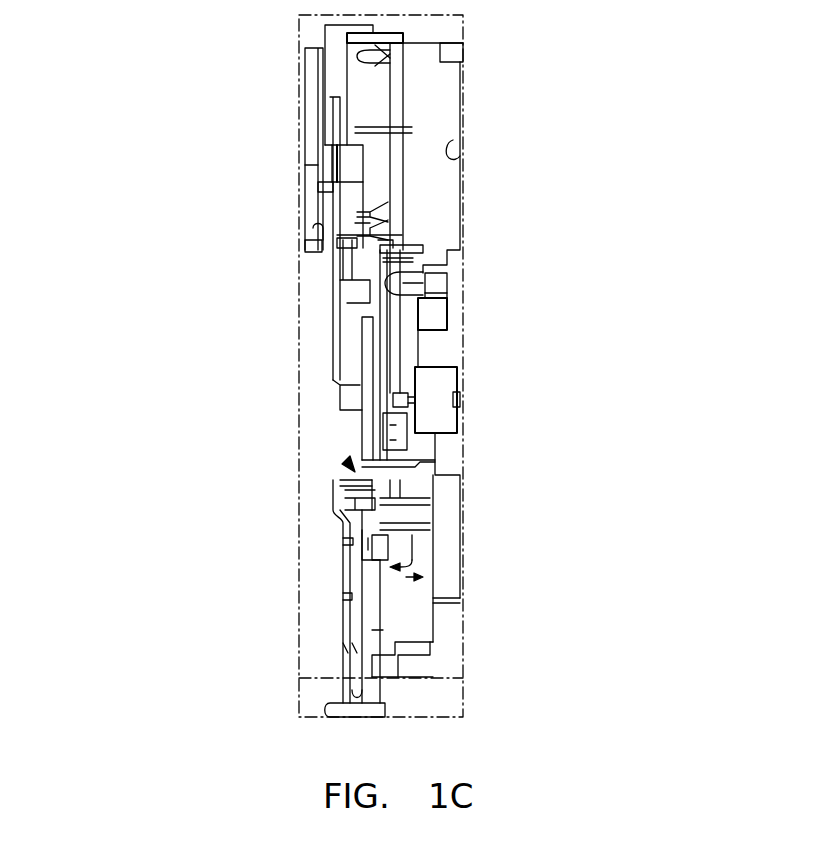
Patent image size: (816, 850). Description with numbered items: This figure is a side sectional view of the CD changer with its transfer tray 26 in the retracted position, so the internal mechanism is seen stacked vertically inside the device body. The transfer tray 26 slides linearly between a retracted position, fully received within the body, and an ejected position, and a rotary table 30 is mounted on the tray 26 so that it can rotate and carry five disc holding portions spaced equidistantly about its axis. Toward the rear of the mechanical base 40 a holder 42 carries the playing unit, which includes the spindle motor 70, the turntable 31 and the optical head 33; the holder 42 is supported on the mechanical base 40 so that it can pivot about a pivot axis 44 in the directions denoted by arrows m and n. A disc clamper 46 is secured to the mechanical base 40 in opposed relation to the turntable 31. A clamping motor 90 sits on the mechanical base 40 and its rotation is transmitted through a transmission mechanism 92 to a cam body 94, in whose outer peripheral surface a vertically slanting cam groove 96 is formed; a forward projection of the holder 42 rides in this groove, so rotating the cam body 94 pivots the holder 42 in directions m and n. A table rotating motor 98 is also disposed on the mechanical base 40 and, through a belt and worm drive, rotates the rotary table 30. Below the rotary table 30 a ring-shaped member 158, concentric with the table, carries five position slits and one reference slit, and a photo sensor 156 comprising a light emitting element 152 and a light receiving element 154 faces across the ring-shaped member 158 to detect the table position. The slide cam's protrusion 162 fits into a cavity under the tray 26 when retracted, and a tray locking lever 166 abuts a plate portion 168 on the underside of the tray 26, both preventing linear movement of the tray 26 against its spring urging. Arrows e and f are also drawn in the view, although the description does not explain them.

The transfer tray 26 is at (383, 632).
The rotary table 30 is at (335, 344).
The turntable 31 is at (360, 192).
The optical head 33 is at (352, 163).
The mechanical base 40 is at (450, 150).
The holder 42 is at (412, 90).
The pivot axis 44 is at (407, 437).
The disc clamper 46 is at (310, 183).
The spindle motor 70 is at (352, 224).
The clamping motor 90 is at (440, 423).
The transmission mechanism 92 is at (432, 340).
The cam body 94 is at (432, 300).
The cam groove 96 is at (420, 250).
The table rotating motor 98 is at (378, 255).
The light emitting element 152 is at (350, 498).
The light receiving element 154 is at (350, 500).
The photo sensor 156 is at (343, 487).
The ring-shaped member 158 is at (343, 490).
The protrusion 162 is at (347, 461).
The tray locking lever 166 is at (378, 552).
The plate portion 168 is at (368, 550).
The pivot direction arrow m is at (375, 128).
The pivot direction arrow n is at (453, 140).
The direction e is at (412, 560).
The direction f is at (406, 577).